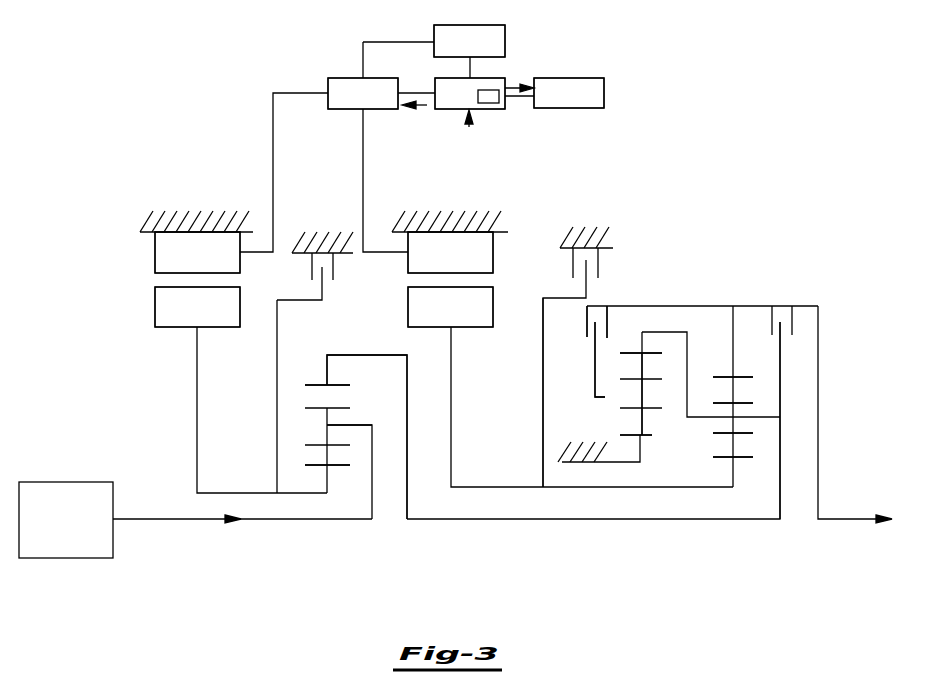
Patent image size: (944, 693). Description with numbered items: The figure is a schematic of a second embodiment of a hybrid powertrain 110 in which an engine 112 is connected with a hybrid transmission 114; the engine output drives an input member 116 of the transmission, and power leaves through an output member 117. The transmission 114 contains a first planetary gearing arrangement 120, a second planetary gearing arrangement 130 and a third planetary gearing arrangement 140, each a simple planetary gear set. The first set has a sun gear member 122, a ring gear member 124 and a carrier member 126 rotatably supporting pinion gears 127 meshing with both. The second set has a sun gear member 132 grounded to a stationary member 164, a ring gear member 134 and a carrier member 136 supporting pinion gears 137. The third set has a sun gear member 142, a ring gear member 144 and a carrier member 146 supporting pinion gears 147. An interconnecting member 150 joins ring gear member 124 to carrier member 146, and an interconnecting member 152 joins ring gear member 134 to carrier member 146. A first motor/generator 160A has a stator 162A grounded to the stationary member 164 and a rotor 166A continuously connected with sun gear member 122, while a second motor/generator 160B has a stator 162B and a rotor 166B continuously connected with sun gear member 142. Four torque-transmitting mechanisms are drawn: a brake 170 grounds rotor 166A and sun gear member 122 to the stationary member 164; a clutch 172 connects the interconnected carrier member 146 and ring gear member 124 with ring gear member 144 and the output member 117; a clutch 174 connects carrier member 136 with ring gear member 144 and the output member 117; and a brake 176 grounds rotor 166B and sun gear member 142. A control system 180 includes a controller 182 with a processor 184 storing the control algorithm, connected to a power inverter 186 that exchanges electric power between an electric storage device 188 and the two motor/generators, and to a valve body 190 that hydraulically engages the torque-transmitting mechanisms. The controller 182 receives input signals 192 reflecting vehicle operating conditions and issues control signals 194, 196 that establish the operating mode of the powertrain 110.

The hybrid powertrain 110 is at (720, 70).
The engine 112 is at (52, 551).
The hybrid transmission 114 is at (640, 220).
The input member 116 is at (158, 522).
The output member 117 is at (848, 522).
The first planetary gearing arrangement 120 is at (335, 486).
The sun gear member 122 is at (321, 465).
The ring gear member 124 is at (315, 385).
The carrier member 126 is at (363, 424).
The pinion gears 127 is at (327, 428).
The second planetary gearing arrangement 130 is at (650, 452).
The sun gear member 132 is at (652, 436).
The ring gear member 134 is at (637, 352).
The carrier member 136 is at (605, 397).
The pinion gears 137 is at (644, 396).
The third planetary gearing arrangement 140 is at (739, 468).
The sun gear member 142 is at (725, 460).
The ring gear member 144 is at (745, 377).
The carrier member 146 is at (765, 420).
The pinion gears 147 is at (733, 408).
The interconnecting member 150 is at (508, 520).
The interconnecting member 152 is at (690, 365).
The first motor/generator 160A is at (117, 275).
The second motor/generator 160B is at (508, 271).
The stator 162A is at (180, 264).
The stator 162B is at (433, 264).
The stationary member 164 is at (188, 211).
The rotor 166A is at (180, 318).
The rotor 166B is at (433, 318).
The brake 170 is at (331, 296).
The clutch 172 is at (790, 345).
The clutch 174 is at (585, 344).
The brake 176 is at (569, 284).
The control system 180 is at (603, 58).
The controller 182 is at (444, 105).
The processor 184 is at (493, 104).
The power inverter 186 is at (349, 105).
The electric storage device 188 is at (456, 52).
The valve body 190 is at (555, 105).
The input signals 192 is at (469, 125).
The control signal 194 is at (427, 106).
The control signal 196 is at (512, 83).